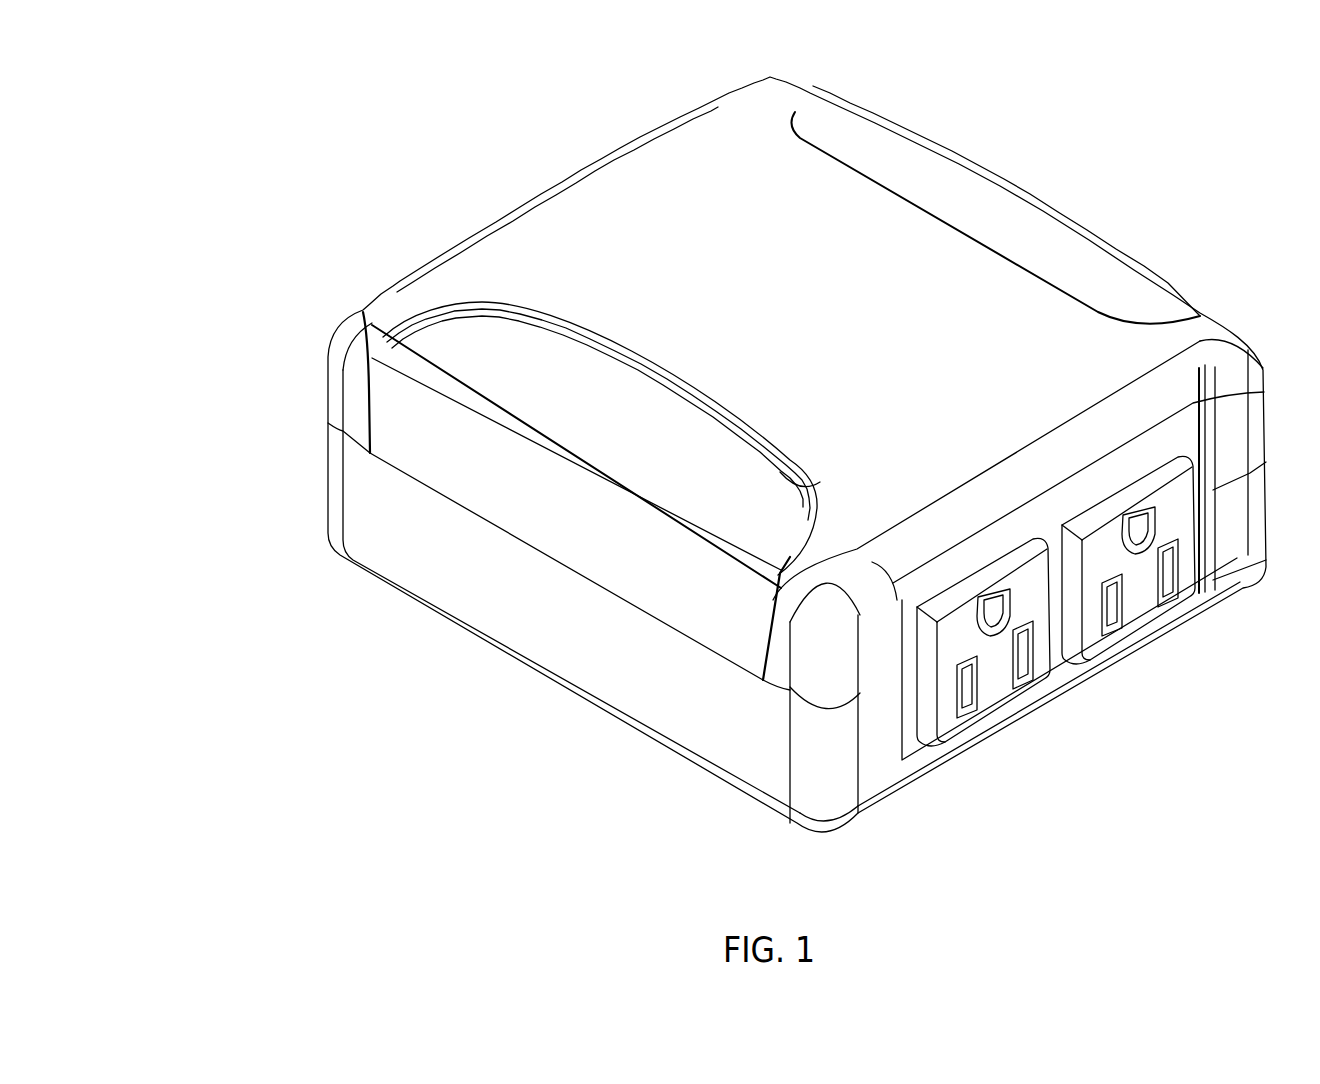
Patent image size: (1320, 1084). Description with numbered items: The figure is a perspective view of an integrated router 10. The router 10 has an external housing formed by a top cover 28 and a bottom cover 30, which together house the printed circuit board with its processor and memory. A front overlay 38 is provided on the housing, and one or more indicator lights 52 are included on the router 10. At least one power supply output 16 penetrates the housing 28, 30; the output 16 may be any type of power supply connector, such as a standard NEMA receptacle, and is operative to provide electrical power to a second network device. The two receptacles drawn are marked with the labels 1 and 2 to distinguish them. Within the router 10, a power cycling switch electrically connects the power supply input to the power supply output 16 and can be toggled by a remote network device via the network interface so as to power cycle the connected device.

The integrated router 10 is at (155, 92).
The top cover 28 is at (548, 242).
The front overlay 38 is at (583, 412).
The indicator light 52 is at (770, 490).
The bottom cover 30 is at (425, 606).
The power supply output 16 is at (1056, 634).
The first outlet 1 is at (983, 642).
The second outlet 2 is at (1128, 560).